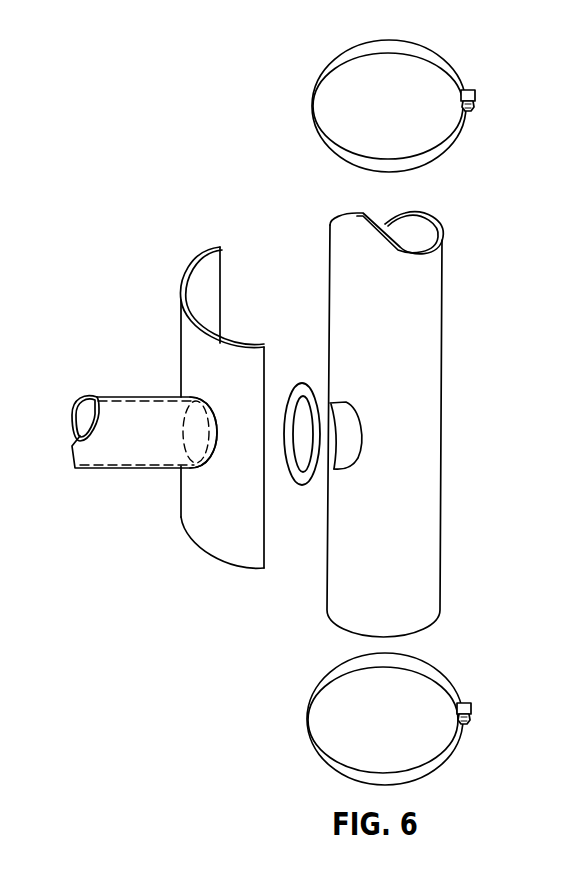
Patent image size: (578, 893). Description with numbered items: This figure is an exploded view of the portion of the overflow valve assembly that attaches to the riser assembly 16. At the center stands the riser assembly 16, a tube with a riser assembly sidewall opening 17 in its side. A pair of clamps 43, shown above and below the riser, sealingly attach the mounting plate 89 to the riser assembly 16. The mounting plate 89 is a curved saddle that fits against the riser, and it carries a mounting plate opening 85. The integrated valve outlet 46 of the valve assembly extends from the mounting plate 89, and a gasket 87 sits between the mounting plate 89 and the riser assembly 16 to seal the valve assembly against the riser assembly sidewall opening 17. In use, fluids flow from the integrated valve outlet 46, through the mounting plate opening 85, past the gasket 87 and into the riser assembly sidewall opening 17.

The riser assembly 16 is at (421, 419).
The riser assembly sidewall opening 17 is at (349, 403).
The clamps 43 is at (432, 66).
The integrated valve outlet 46 is at (116, 420).
The mounting plate opening 85 is at (213, 450).
The gasket 87 is at (301, 381).
The mounting plate 89 is at (203, 282).